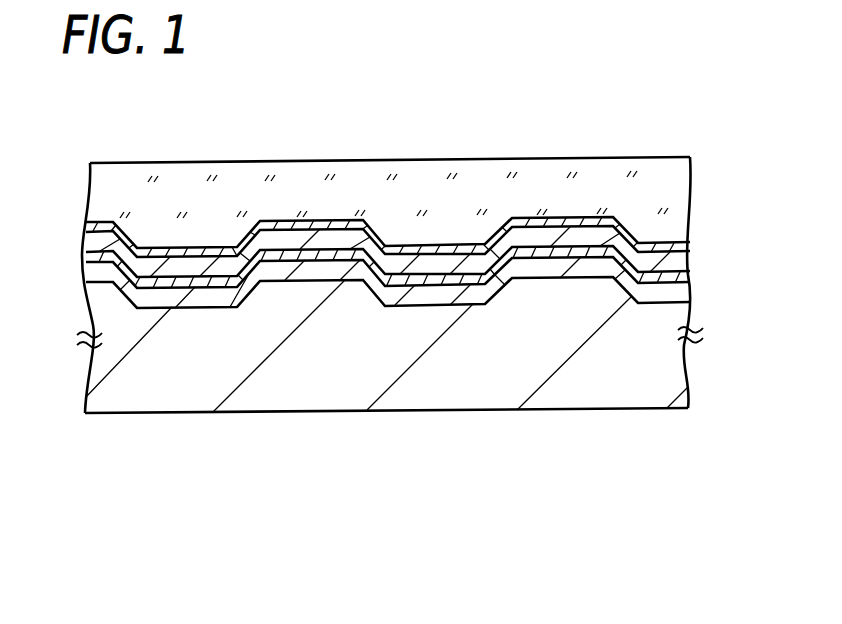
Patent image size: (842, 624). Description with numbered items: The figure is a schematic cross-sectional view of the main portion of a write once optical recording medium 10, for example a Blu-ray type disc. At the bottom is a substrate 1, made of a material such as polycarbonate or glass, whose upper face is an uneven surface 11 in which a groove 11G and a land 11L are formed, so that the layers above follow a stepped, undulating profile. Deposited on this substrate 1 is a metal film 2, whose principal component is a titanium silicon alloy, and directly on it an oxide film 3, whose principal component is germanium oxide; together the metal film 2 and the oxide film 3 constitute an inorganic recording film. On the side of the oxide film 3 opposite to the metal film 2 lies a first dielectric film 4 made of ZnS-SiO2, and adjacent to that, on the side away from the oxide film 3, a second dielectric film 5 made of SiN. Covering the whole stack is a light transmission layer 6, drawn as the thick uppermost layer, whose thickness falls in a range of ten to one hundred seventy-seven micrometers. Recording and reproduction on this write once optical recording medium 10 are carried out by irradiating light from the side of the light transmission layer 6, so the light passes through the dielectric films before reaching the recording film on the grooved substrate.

The substrate 1 is at (663, 370).
The metal film 2 is at (663, 293).
The oxide film 3 is at (673, 281).
The first dielectric film 4 is at (672, 260).
The second dielectric film 5 is at (668, 248).
The light transmission layer 6 is at (677, 178).
The write once optical recording medium 10 is at (404, 109).
The uneven surface 11 is at (387, 460).
The groove 11G is at (222, 302).
The land 11L is at (338, 294).